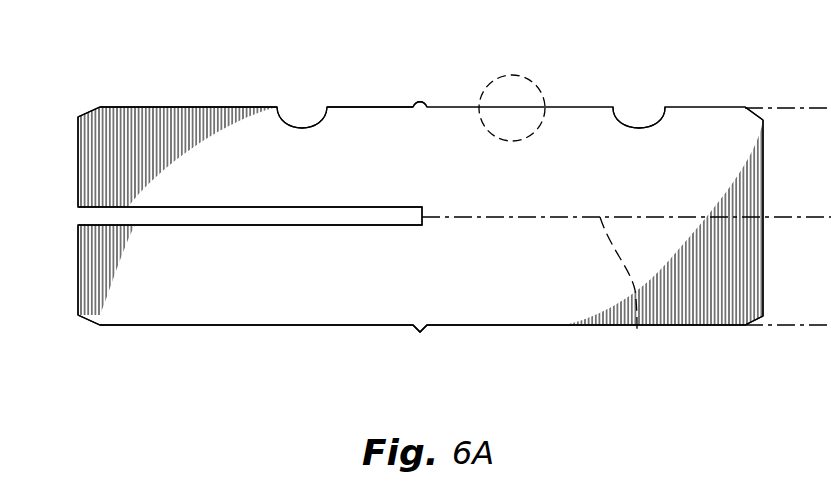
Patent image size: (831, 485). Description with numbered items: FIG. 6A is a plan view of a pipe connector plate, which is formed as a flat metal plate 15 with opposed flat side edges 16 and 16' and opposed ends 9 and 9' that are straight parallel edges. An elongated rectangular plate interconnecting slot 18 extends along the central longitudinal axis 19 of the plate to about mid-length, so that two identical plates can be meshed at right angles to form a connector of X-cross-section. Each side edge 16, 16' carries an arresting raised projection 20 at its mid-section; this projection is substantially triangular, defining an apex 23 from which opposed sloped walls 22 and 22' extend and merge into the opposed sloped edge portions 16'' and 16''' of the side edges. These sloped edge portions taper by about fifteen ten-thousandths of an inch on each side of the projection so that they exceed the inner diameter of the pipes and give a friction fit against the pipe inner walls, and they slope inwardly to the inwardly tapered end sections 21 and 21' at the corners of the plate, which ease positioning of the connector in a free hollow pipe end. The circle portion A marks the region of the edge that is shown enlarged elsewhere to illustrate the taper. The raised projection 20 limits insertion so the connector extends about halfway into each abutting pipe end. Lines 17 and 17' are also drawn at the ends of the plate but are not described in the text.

The flat metal plate 15 is at (630, 186).
The inwardly tapered end section 21 is at (70, 231).
The opposed end 9 is at (52, 216).
The plate interconnecting slot 18 is at (166, 225).
The sloped edge portion 16'' is at (287, 84).
The side edge 16 is at (256, 62).
The arresting raised projection 20 is at (420, 100).
The circle portion A is at (518, 74).
The sloped edge portion 16''' is at (637, 78).
The inwardly tapered end section 21' is at (737, 224).
The phantom extension line 17 is at (788, 146).
The opposed end 9' is at (786, 218).
The central longitudinal axis 19 is at (619, 299).
The sloped wall 22 is at (346, 362).
The apex 23 is at (421, 331).
The sloped wall 22' is at (460, 355).
The side edge 16' is at (422, 385).
The phantom extension line 17' is at (788, 358).